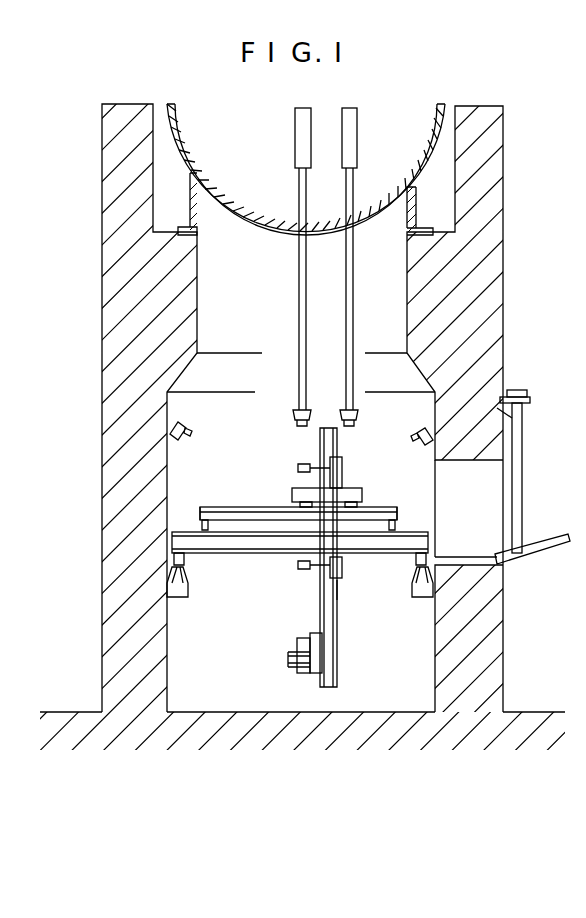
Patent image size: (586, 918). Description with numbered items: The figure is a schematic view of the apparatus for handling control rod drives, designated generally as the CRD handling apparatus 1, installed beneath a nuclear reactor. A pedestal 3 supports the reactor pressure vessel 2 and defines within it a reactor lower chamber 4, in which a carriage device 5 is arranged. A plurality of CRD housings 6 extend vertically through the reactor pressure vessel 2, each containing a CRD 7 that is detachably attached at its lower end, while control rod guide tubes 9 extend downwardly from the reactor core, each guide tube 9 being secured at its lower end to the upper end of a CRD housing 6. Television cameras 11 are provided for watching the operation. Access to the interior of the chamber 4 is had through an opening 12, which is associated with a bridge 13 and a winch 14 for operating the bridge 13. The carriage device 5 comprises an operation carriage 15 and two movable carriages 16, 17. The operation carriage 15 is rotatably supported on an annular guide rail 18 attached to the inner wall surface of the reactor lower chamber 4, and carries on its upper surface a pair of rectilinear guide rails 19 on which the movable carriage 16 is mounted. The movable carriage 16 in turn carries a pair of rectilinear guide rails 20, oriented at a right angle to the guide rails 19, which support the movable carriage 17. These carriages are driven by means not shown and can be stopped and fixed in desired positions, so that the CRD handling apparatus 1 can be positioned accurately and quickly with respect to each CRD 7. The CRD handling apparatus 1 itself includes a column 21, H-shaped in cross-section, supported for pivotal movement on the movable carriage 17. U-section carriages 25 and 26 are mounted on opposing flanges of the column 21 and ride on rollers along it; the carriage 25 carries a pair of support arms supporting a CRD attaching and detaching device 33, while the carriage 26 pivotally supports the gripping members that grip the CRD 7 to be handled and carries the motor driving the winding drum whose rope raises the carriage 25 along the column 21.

The CRD handling apparatus 1 is at (347, 596).
The reactor pressure vessel 2 is at (237, 212).
The pedestal 3 is at (505, 193).
The reactor lower chamber 4 is at (162, 692).
The carriage device 5 is at (257, 505).
The CRD housing 6 is at (352, 312).
The CRD 7 is at (296, 419).
The control rod guide tube 9 is at (295, 150).
The television camera 11 is at (421, 430).
The opening 12 is at (495, 477).
The bridge 13 is at (533, 553).
The winch 14 is at (522, 497).
The operation carriage 15 is at (238, 553).
The movable carriage 16 is at (208, 510).
The movable carriage 17 is at (297, 488).
The annular guide rail 18 is at (418, 571).
The rectilinear guide rails 19 is at (202, 530).
The rectilinear guide rails 20 is at (386, 507).
The column 21 is at (333, 637).
The carriage 25 is at (314, 633).
The carriage 26 is at (342, 470).
The CRD attaching and detaching device 33 is at (297, 640).